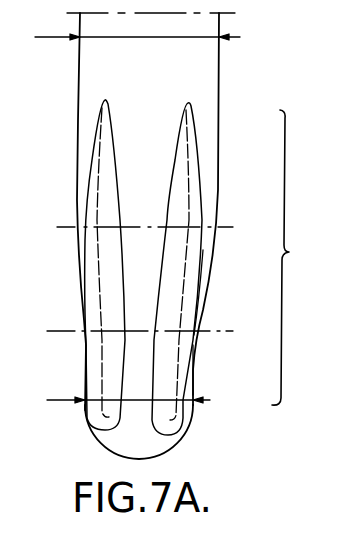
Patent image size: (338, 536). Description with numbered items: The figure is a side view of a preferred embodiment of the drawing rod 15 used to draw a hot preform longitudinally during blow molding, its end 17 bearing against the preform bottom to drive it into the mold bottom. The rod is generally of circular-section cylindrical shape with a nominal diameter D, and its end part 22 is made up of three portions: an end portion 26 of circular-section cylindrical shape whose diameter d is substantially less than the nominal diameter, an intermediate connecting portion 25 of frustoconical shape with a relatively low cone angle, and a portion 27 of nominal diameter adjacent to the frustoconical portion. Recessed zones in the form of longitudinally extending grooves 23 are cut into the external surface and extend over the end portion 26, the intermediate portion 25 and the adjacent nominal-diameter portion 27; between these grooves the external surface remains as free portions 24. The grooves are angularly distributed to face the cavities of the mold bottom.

The drawing rod 15 is at (222, 78).
The end of the drawing rod 17 is at (136, 445).
The end part of the drawing rod 22 is at (182, 257).
The recessed zones (grooves) 23 is at (115, 341).
The free portions of the external surface 24 is at (143, 268).
The intermediate connecting portion 25 is at (203, 267).
The end portion 26 is at (195, 371).
The portion of nominal diameter 27 is at (212, 148).